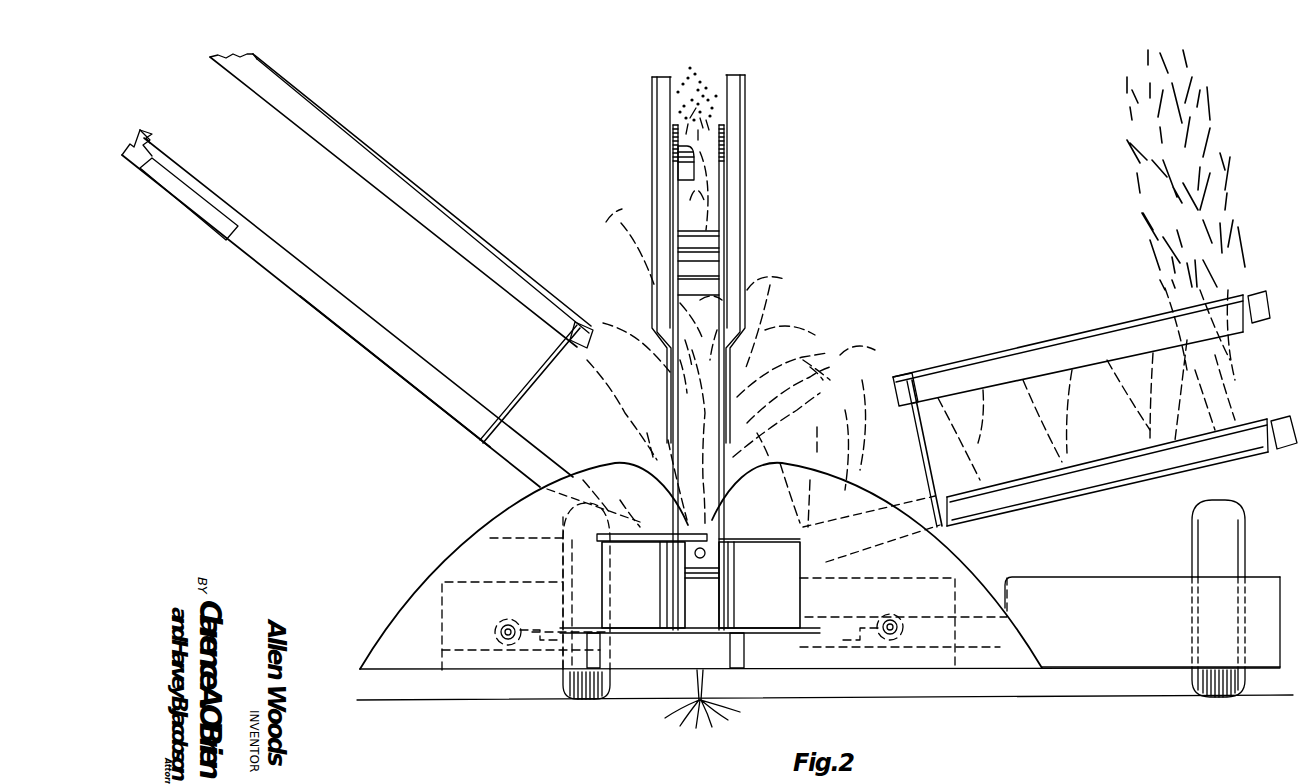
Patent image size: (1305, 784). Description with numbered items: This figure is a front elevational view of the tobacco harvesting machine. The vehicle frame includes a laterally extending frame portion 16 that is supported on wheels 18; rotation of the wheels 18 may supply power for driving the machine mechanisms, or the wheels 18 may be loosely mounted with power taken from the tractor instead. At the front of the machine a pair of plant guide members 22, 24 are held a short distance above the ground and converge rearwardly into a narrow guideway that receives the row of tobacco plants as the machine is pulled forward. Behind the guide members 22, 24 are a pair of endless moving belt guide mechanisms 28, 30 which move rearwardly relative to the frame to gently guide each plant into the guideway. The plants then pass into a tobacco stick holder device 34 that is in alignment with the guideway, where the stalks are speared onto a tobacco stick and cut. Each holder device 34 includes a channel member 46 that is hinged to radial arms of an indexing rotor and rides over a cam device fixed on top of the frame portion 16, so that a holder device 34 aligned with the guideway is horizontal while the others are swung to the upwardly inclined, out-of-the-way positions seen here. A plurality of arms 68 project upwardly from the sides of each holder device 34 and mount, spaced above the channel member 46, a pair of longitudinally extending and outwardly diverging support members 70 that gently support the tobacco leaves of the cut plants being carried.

The laterally extending frame portion 16 is at (1098, 588).
The wheels 18 is at (1229, 520).
The plant guide member 22 is at (845, 498).
The plant guide member 24 is at (445, 563).
The endless moving belt guide mechanism 28 is at (759, 612).
The endless moving belt guide mechanism 30 is at (651, 612).
The tobacco stick holder device 34 is at (338, 340).
The channel member 46 is at (401, 360).
The arms 68 is at (522, 397).
The support members 70 is at (465, 244).